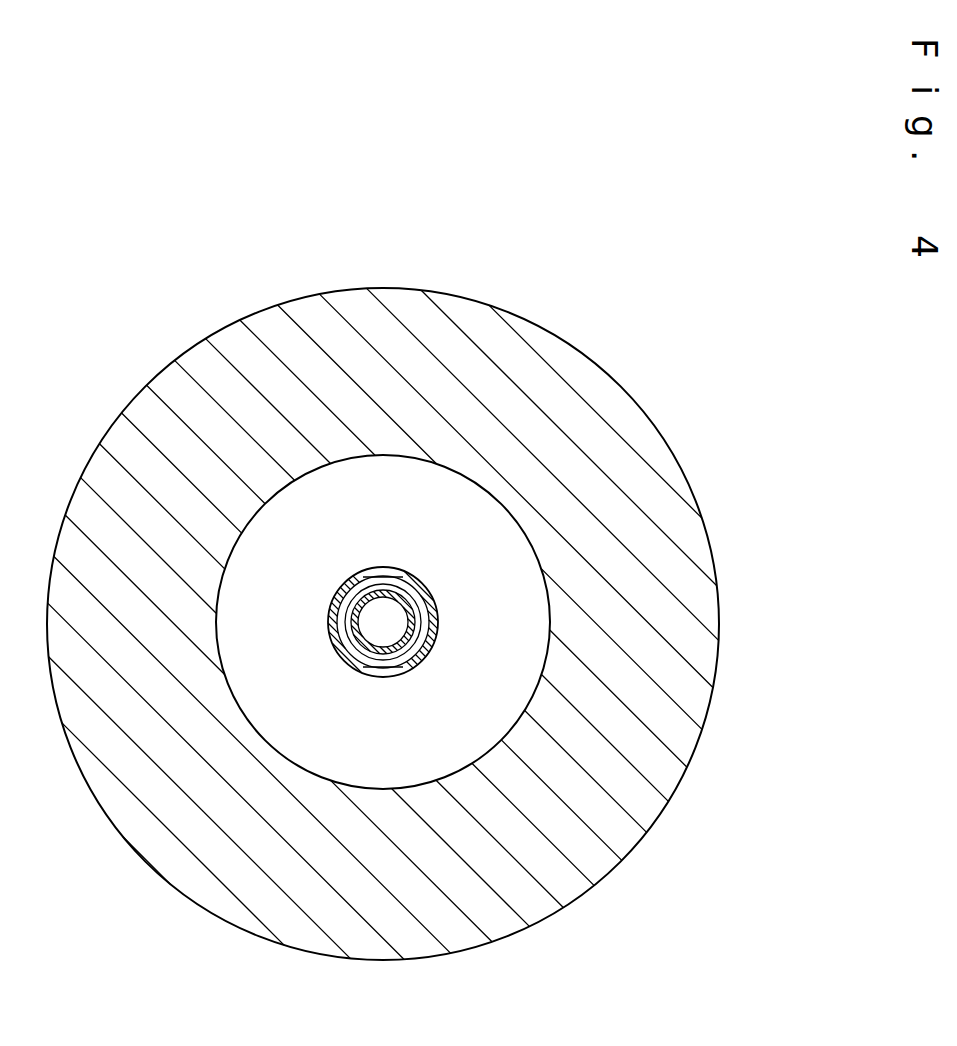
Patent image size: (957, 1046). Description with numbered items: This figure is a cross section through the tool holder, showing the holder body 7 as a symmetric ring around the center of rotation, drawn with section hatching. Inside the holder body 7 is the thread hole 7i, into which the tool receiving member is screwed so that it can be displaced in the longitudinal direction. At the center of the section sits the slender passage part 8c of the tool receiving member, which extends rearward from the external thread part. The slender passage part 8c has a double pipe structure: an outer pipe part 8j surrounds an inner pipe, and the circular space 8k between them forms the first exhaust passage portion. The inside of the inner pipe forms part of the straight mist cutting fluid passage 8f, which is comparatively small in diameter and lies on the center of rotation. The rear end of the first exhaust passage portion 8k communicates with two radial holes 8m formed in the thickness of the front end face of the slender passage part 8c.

The holder body 7 is at (447, 292).
The thread hole 7i is at (387, 457).
The slender passage part 8c is at (435, 597).
The radial holes 8m is at (367, 578).
The circular space 8k is at (347, 637).
The outer pipe part 8j is at (413, 578).
The mist cutting fluid passage 8f is at (373, 615).